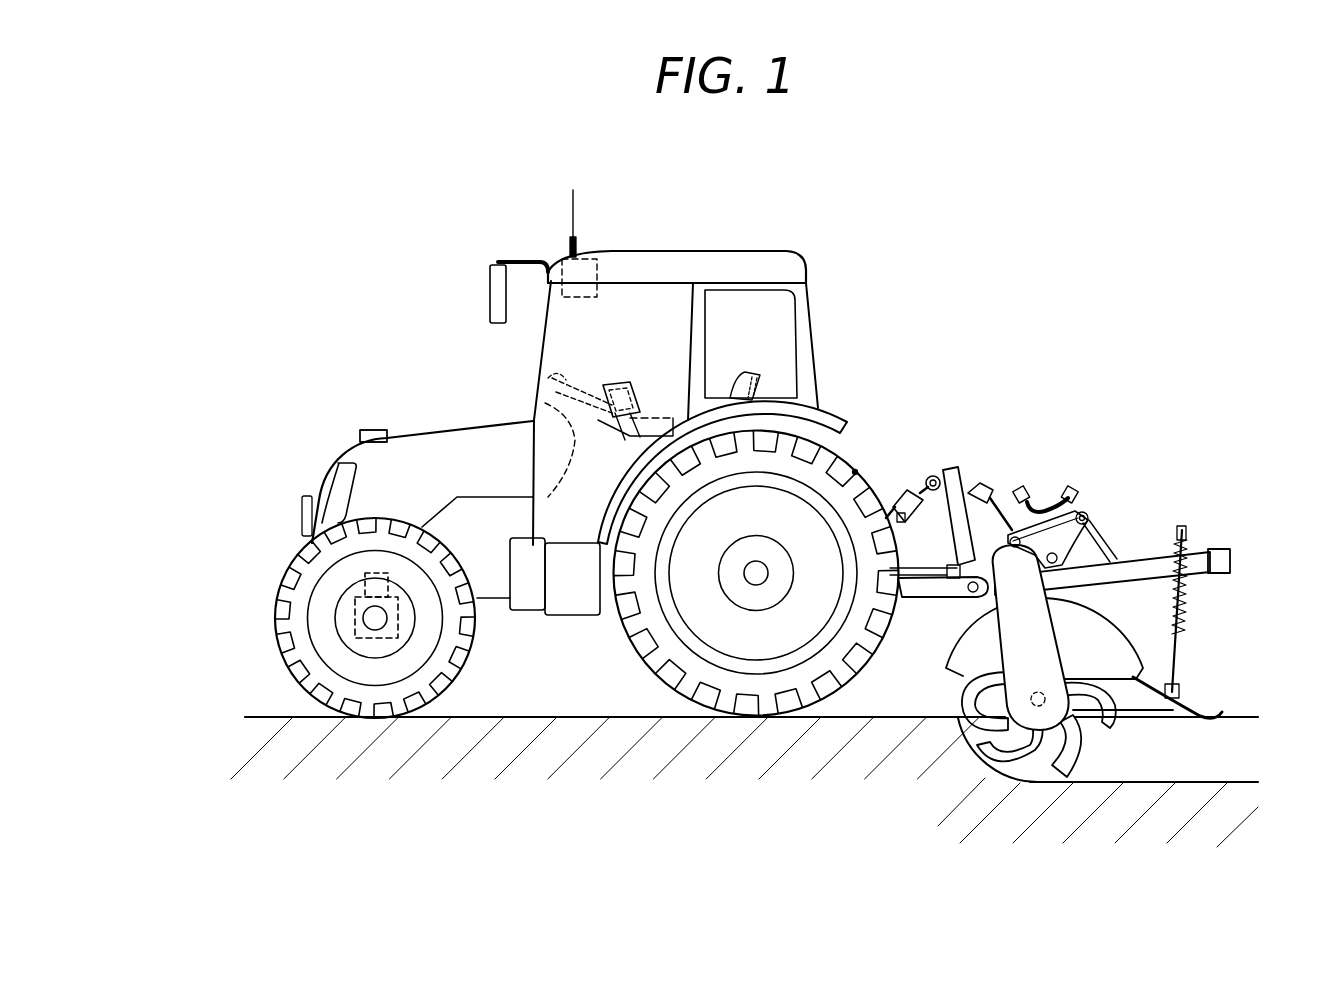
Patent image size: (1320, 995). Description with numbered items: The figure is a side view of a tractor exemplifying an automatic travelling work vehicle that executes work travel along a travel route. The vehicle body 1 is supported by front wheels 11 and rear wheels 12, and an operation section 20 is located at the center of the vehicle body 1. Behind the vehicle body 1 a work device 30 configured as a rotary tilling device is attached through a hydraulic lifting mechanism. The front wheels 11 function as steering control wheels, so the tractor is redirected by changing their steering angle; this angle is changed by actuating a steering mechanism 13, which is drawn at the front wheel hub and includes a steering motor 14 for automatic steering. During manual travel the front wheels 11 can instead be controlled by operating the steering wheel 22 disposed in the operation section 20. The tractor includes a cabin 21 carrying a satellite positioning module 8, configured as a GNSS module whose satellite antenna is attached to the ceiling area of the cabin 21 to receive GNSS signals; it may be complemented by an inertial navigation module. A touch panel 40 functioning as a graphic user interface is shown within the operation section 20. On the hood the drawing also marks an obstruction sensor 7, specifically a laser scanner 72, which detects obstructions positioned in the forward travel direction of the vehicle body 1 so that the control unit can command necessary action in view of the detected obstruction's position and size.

The vehicle body 1 is at (388, 303).
The obstruction sensor 7 is at (373, 436).
The laser scanner (LiDAR) 72 is at (380, 431).
The satellite positioning module 8 is at (598, 268).
The front wheel 11 is at (371, 705).
The rear wheel 12 is at (770, 693).
The steering mechanism 13 is at (354, 619).
The steering motor 14 is at (362, 582).
The operation section 20 is at (628, 346).
The cabin 21 is at (807, 268).
The steering wheel 22 is at (577, 380).
The work device 30 is at (1115, 503).
The touch panel 40 is at (637, 383).